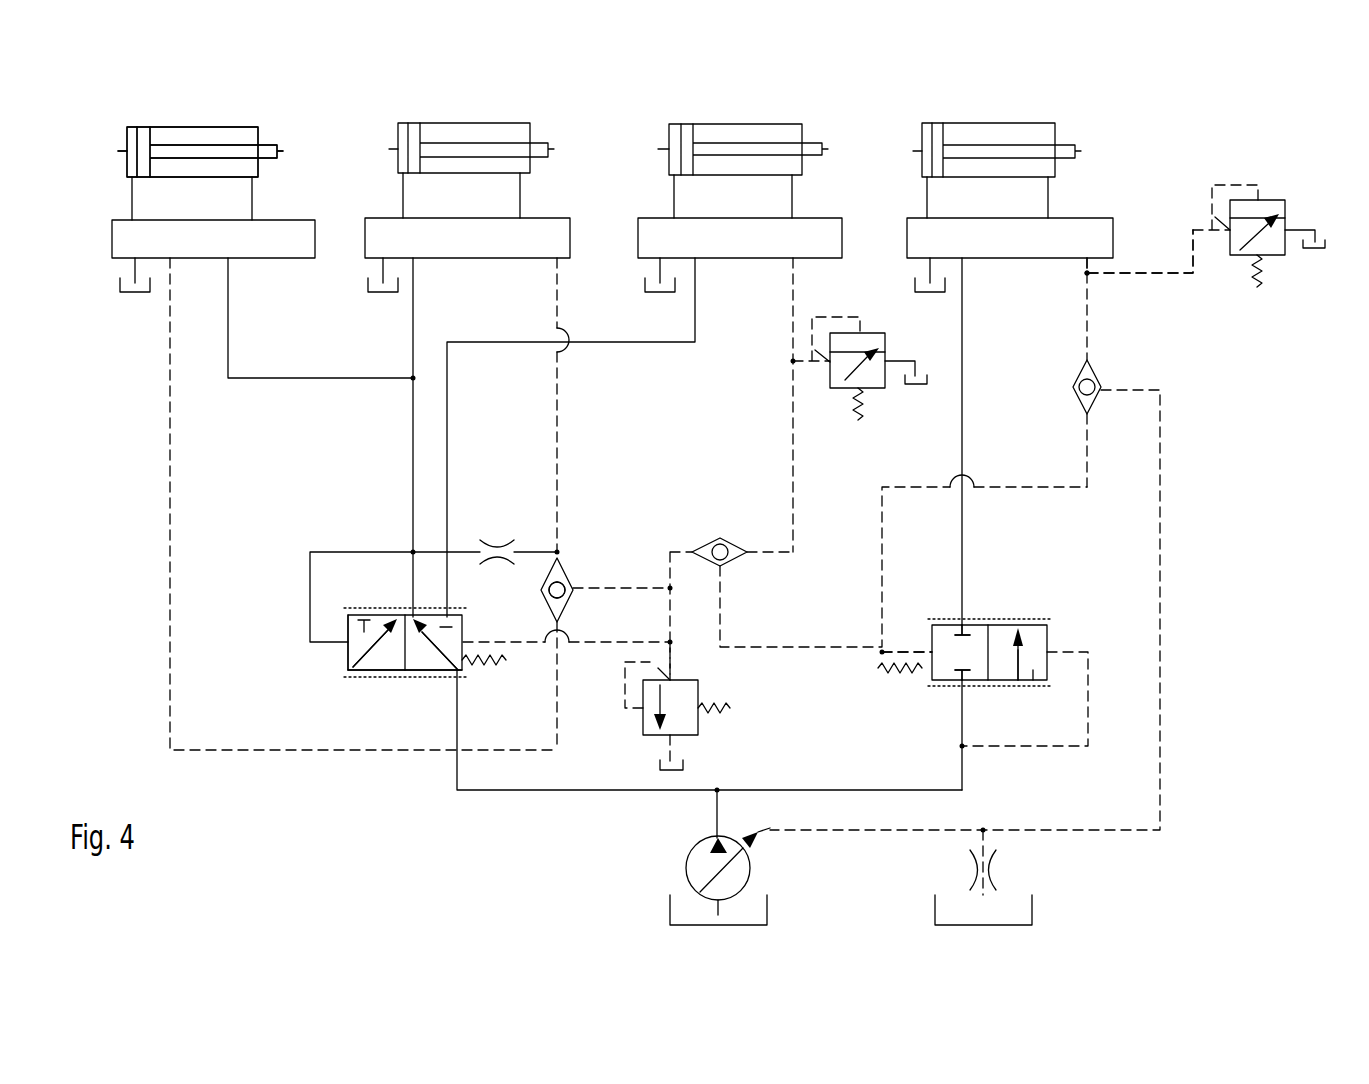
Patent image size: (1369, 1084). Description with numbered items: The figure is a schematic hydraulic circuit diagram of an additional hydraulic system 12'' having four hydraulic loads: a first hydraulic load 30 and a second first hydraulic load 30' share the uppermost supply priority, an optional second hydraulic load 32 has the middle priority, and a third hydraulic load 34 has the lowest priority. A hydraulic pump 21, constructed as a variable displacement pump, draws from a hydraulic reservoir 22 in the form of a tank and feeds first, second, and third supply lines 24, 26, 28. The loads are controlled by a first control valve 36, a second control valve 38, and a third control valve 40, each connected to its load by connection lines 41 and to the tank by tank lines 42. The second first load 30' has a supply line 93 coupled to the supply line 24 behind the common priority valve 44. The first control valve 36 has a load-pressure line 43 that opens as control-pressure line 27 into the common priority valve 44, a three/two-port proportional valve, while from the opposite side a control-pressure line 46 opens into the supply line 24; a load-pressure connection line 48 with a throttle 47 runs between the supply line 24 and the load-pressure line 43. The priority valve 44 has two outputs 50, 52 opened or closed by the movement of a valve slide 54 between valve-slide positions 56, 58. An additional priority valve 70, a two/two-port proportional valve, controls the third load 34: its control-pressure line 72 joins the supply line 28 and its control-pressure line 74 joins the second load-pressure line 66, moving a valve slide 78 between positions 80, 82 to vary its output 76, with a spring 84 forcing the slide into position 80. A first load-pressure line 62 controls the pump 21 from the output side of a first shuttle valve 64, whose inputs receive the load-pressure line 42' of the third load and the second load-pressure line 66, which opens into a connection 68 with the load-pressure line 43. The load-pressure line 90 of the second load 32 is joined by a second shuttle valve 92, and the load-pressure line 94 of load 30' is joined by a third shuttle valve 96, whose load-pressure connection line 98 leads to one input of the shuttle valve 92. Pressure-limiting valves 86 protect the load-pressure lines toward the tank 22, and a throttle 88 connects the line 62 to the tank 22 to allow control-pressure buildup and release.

The hydraulic system 12'' is at (436, 849).
The hydraulic pump 21 is at (692, 852).
The hydraulic reservoir 22 is at (118, 286).
The first hydraulic supply line 24 is at (413, 430).
The second hydraulic supply line 26 is at (447, 415).
The control-pressure line 27 is at (592, 642).
The third hydraulic supply line 28 is at (962, 392).
The first hydraulic load 30 is at (471, 124).
The second first hydraulic load 30' is at (200, 127).
The second hydraulic load 32 is at (702, 124).
The third hydraulic load 34 is at (953, 124).
The first control valve 36 is at (548, 218).
The second control valve 38 is at (820, 218).
The third control valve 40 is at (1085, 218).
The connection lines 41 is at (252, 200).
The tank lines 42 is at (502, 214).
The load-pressure line 42' is at (1139, 269).
The load-pressure line 43 is at (557, 305).
The common priority valve 44 is at (370, 680).
The control-pressure line 46 is at (310, 568).
The throttle or diaphragm 47 is at (495, 542).
The load-pressure connection line 48 is at (420, 552).
The output 50 is at (406, 615).
The output 52 is at (447, 615).
The valve slide 54 is at (348, 668).
The valve-slide position 56 is at (390, 675).
The valve-slide position 58 is at (425, 675).
The first load-pressure line 62 is at (1160, 466).
The first shuttle valve 64 is at (1095, 372).
The second load-pressure line 66 is at (882, 492).
The connection 68 is at (557, 552).
The additional priority valve 70 is at (1024, 623).
The control-pressure line 72 is at (1088, 705).
The control-pressure line 74 is at (906, 652).
The output 76 is at (962, 622).
The valve slide 78 is at (1047, 640).
The valve-slide position 80 is at (972, 680).
The valve-slide position 82 is at (1033, 680).
The spring 84 is at (900, 672).
The pressure-limiting valve 86 is at (877, 333).
The throttle or diaphragm 88 is at (1000, 868).
The load-pressure line 90 is at (793, 448).
The second shuttle valve 92 is at (733, 545).
The supply line 93 is at (283, 378).
The load-pressure line 94 is at (170, 418).
The third shuttle valve 96 is at (557, 578).
The load-pressure connection line 98 is at (605, 588).